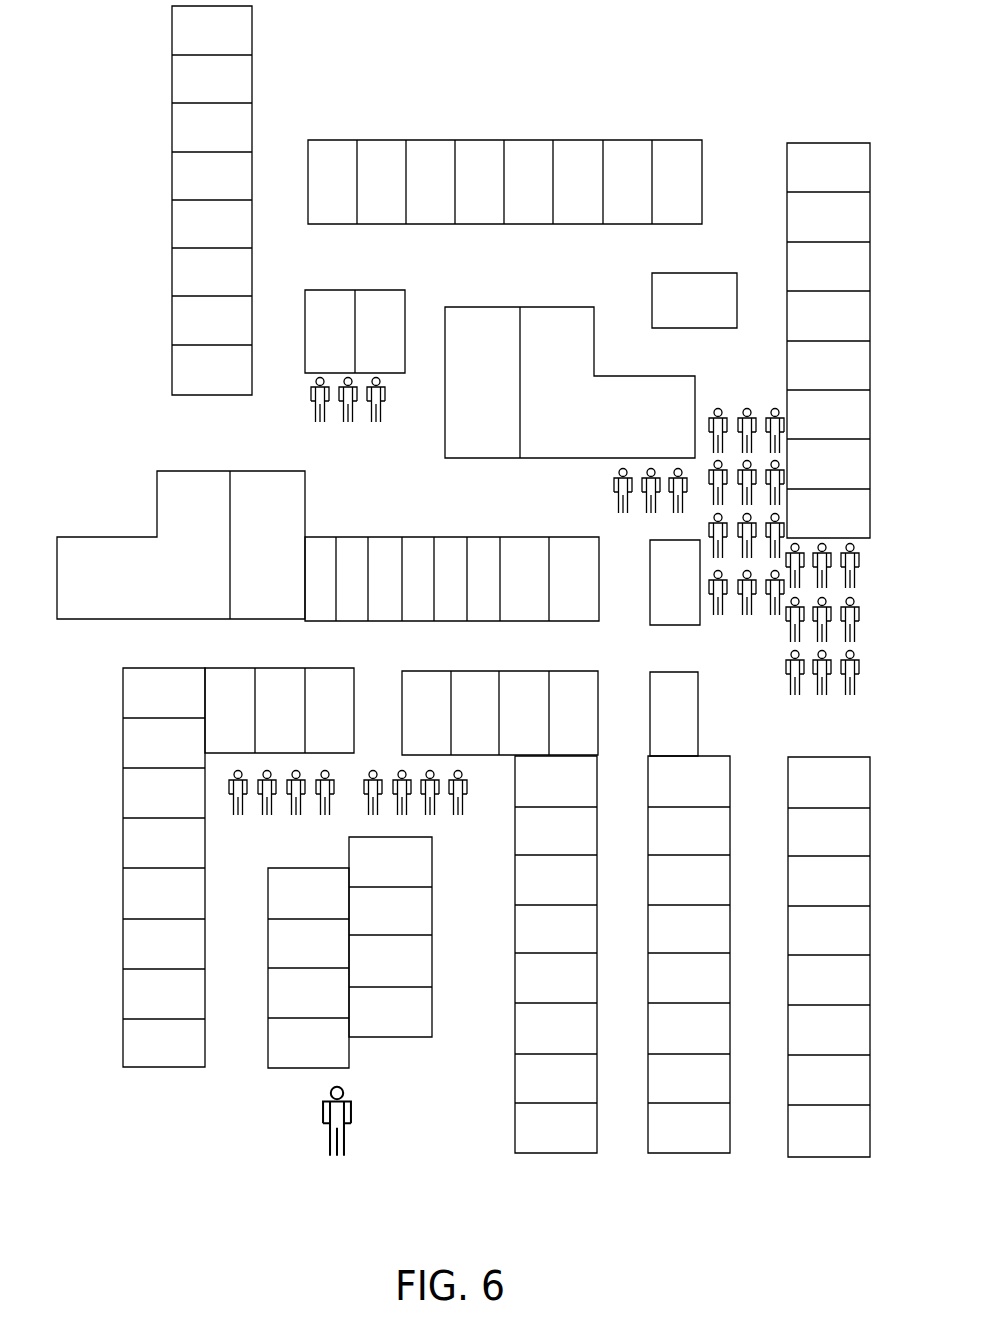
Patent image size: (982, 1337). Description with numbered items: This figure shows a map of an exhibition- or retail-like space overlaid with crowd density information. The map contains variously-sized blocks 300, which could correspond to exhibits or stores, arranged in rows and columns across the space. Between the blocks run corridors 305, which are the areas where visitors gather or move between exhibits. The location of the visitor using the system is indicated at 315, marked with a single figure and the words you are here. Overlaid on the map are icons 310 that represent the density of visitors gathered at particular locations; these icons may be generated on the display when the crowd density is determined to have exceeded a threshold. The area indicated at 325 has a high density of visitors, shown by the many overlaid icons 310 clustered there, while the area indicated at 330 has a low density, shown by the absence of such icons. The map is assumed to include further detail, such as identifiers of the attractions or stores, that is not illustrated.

The blocks 300 is at (172, 17).
The corridors 305 is at (184, 436).
The icons 310 is at (382, 408).
The location of a visitor 315 is at (346, 1132).
The high density area 325 is at (744, 682).
The low density area 330 is at (114, 642).